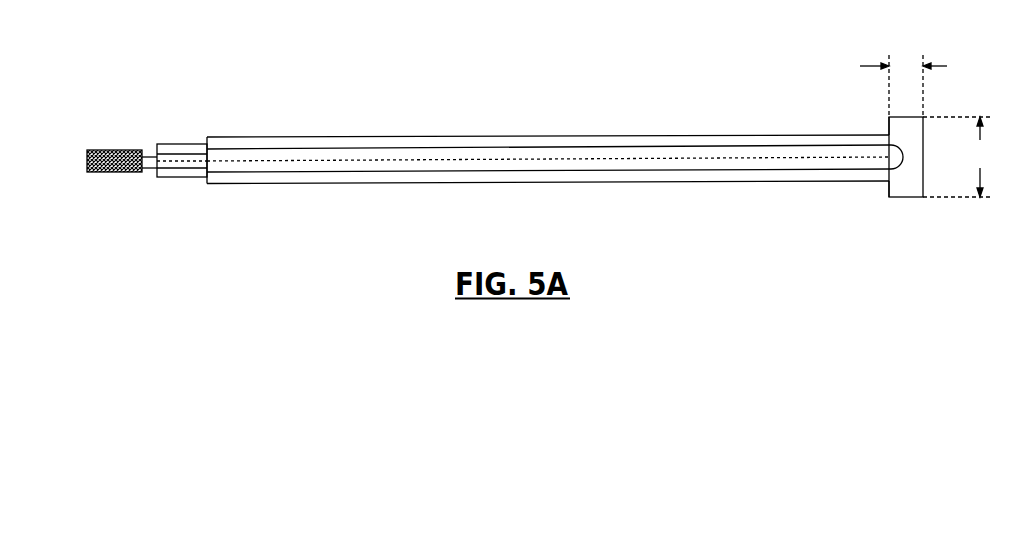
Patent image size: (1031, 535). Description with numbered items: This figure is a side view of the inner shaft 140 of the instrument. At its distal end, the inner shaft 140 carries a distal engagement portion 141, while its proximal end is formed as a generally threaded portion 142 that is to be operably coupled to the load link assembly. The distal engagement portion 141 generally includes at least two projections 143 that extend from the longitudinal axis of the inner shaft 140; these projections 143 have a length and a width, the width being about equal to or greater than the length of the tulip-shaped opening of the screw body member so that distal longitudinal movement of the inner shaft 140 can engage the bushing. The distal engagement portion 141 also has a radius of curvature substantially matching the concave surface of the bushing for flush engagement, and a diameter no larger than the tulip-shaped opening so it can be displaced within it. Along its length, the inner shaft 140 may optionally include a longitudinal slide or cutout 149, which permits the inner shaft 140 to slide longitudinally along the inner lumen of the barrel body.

The inner shaft 140 is at (434, 68).
The distal engagement portion 141 is at (933, 178).
The threaded portion 142 is at (105, 150).
The projections 143 is at (900, 127).
The longitudinal slide or cutout 149 is at (441, 178).